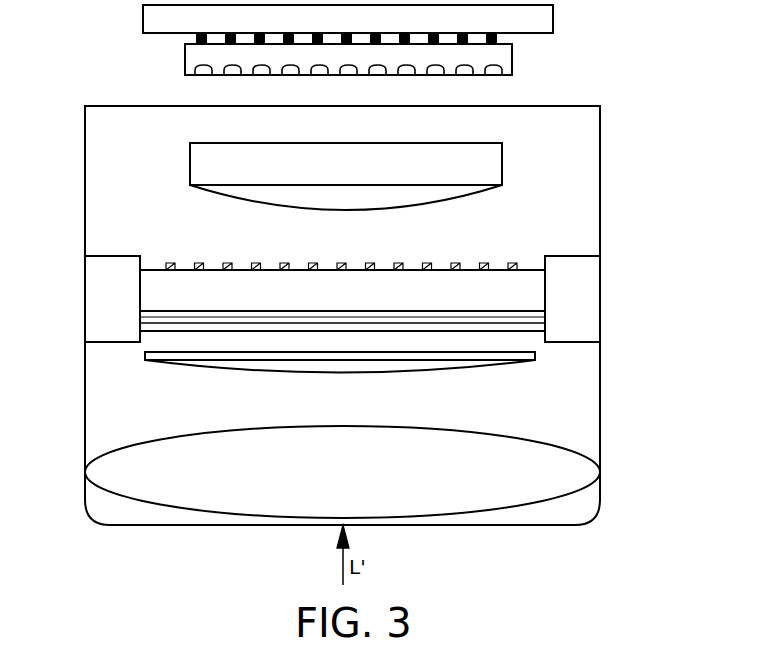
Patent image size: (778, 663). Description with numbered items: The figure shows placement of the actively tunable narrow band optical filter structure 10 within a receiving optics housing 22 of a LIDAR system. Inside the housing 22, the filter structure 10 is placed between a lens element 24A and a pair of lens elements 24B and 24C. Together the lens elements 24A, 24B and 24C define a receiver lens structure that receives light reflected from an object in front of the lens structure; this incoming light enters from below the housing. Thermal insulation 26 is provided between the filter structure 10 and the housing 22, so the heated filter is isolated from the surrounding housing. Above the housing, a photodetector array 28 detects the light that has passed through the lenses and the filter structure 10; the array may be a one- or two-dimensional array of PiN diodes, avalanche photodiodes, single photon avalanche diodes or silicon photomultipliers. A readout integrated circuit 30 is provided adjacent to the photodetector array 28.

The readout integrated circuit 30 is at (143, 20).
The photodetector array 28 is at (185, 60).
The receiving optics housing 22 is at (85, 232).
The lens element 24A is at (205, 166).
The lens element 24B is at (338, 357).
The lens element 24C is at (98, 473).
The thermal insulation 26 is at (582, 320).
The actively tunable narrow band optical filter structure 10 is at (520, 295).